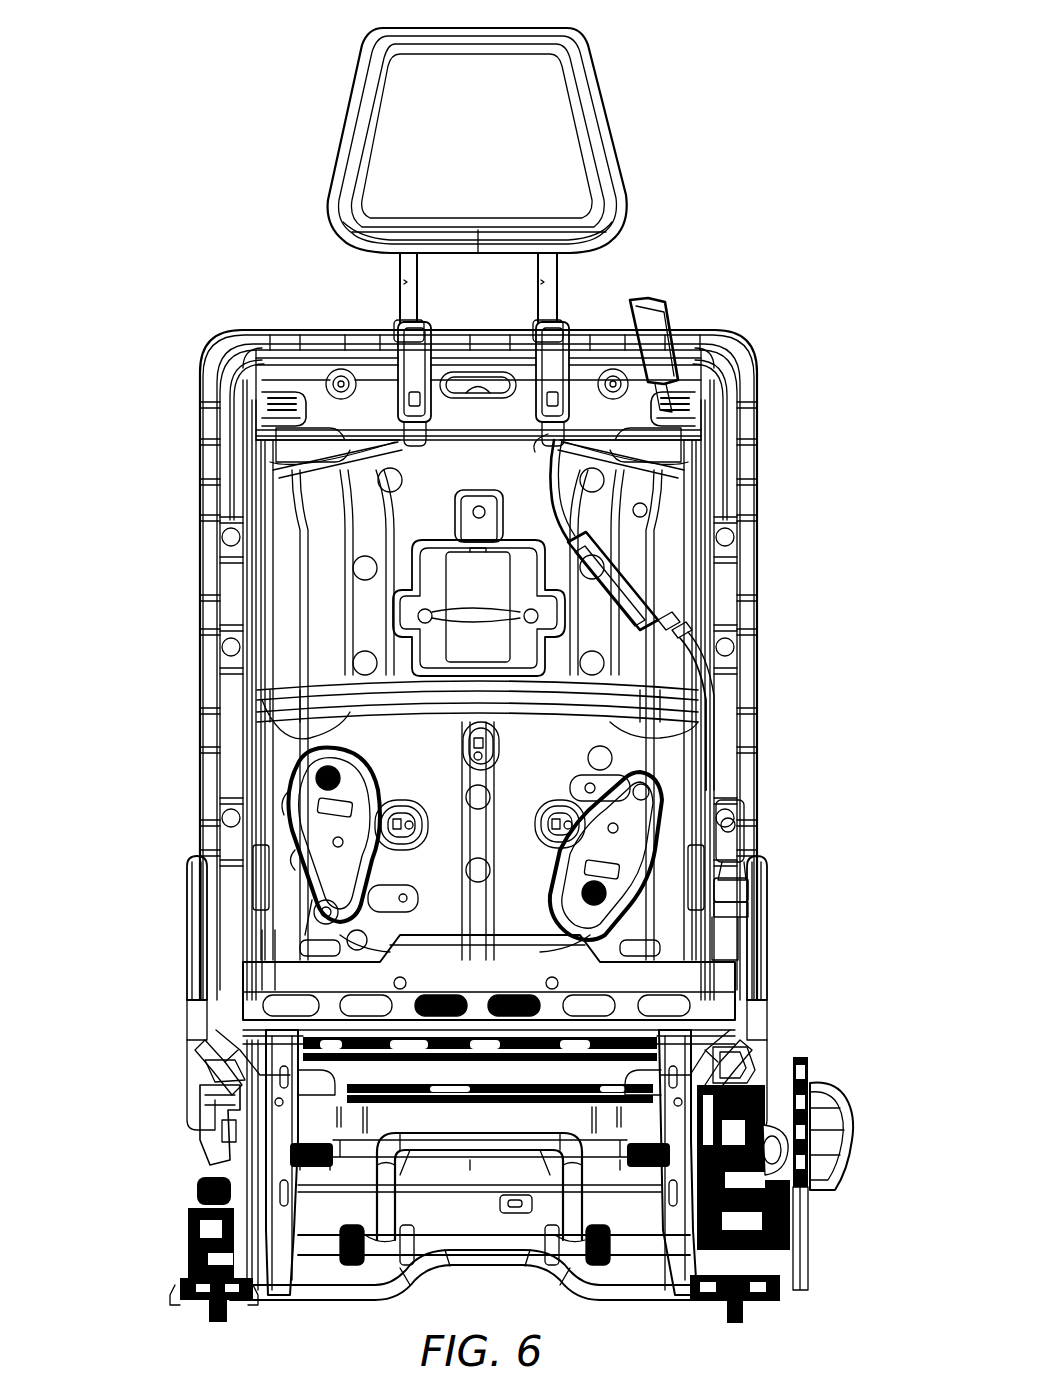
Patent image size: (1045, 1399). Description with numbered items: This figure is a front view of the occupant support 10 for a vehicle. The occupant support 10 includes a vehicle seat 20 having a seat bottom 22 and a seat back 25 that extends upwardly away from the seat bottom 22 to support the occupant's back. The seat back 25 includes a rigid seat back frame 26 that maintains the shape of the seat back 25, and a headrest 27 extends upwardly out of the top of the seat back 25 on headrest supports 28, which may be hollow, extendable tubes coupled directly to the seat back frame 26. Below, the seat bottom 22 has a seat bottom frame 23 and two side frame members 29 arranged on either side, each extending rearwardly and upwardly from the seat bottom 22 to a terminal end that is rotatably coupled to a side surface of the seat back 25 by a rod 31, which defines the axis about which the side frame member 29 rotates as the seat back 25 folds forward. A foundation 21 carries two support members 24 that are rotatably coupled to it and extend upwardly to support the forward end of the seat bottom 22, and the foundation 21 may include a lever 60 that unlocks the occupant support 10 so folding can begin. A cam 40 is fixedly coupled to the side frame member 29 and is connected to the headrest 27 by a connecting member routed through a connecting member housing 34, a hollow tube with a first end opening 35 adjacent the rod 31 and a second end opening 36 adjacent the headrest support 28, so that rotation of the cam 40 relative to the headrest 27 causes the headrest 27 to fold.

The occupant support 10 is at (135, 72).
The vehicle seat 20 is at (198, 251).
The foundation 21 is at (172, 1254).
The seat bottom 22 is at (150, 876).
The seat bottom frame 23 is at (182, 1022).
The support member 24 is at (278, 1128).
The seat back 25 is at (170, 378).
The seat back frame 26 is at (166, 572).
The headrest 27 is at (340, 112).
The headrest support 28 is at (582, 271).
The side frame member 29 is at (796, 936).
The rod 31 is at (740, 890).
The connecting member housing 34 is at (770, 623).
The first end opening 35 is at (727, 857).
The second end opening 36 is at (557, 440).
The cam 40 is at (786, 842).
The lever 60 is at (864, 1106).